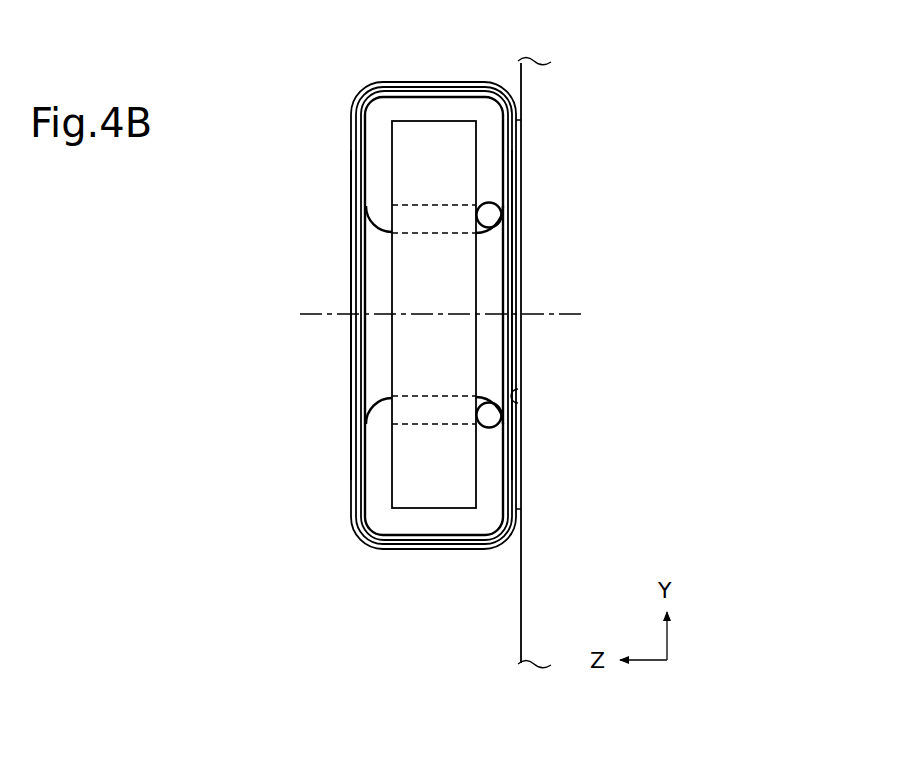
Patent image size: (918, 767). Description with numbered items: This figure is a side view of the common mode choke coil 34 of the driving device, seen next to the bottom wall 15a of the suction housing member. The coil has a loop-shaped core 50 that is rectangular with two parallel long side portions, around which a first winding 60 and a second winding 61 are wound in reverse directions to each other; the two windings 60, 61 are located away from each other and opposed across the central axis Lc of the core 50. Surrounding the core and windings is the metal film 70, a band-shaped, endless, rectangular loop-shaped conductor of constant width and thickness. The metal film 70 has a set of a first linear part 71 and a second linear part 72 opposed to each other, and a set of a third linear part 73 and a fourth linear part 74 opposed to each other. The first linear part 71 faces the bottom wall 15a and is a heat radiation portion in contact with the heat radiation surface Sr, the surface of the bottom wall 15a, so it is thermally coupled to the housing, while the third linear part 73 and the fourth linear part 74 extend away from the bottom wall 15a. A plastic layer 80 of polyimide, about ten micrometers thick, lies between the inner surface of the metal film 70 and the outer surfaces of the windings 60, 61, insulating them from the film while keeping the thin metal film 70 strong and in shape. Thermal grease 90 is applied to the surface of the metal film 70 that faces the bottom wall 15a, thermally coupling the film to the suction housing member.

The common mode choke coil 34 is at (402, 68).
The third linear part 73 is at (419, 82).
The metal film 70 is at (455, 82).
The plastic layer 80 is at (401, 97).
The second linear part 72 is at (352, 338).
The fourth linear part 74 is at (434, 549).
The thermal grease 90 is at (521, 258).
The first linear part 71 is at (517, 357).
The heat radiation surface Sr is at (518, 396).
The core 50 is at (479, 322).
The first winding 60 is at (490, 156).
The second winding 61 is at (487, 468).
The central axis Lc is at (549, 312).
The bottom wall 15a is at (520, 661).